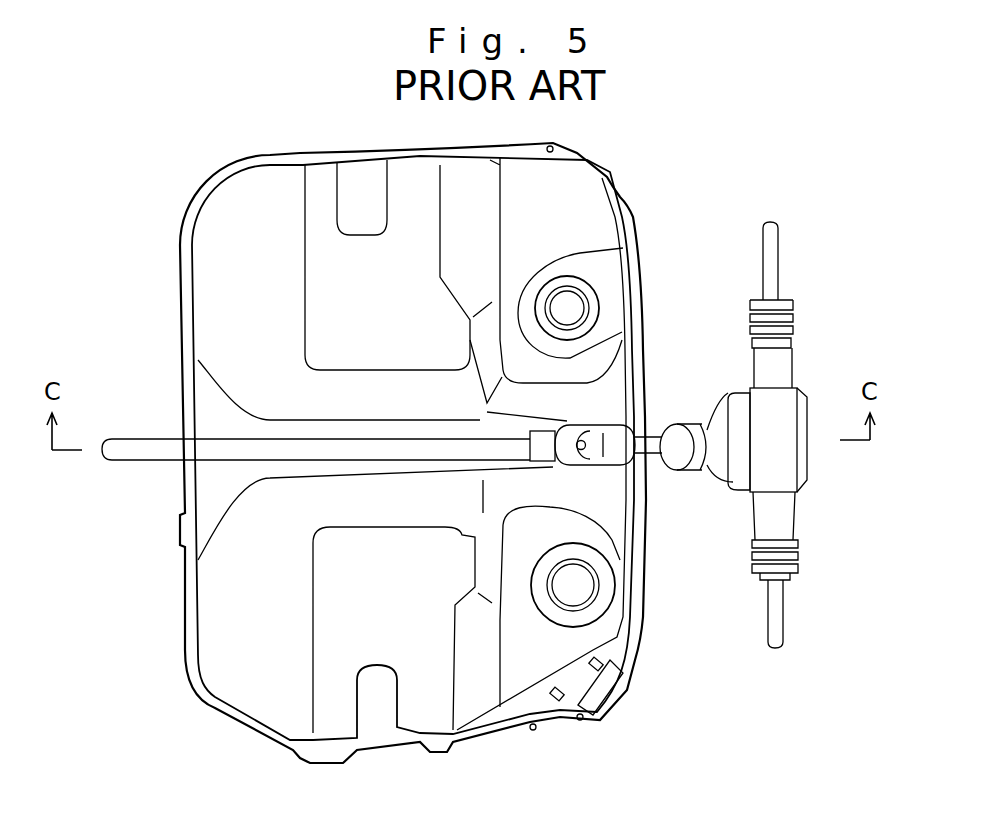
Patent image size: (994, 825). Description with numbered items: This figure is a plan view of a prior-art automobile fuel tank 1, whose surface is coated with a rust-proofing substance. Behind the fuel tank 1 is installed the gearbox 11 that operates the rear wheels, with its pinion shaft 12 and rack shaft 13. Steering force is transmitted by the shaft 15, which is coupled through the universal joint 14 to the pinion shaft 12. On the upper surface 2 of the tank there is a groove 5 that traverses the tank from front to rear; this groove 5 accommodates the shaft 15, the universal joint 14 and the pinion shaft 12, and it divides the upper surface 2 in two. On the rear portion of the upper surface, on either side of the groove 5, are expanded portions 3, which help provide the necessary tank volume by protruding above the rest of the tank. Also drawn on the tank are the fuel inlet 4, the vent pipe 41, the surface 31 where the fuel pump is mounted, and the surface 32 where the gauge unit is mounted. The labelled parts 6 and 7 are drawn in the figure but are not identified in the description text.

The fuel tank 1 is at (184, 722).
The upper surface 2 is at (262, 185).
The expanded portions 3 is at (548, 200).
The fuel pump mounting surface 31 is at (593, 600).
The gauge unit mounting surface 32 is at (587, 313).
The fuel inlet 4 is at (607, 710).
The vent pipe 41 is at (602, 655).
The groove 5 is at (355, 470).
The rod 6 is at (277, 428).
The universal joint 7 is at (598, 466).
The gearbox 11 is at (783, 477).
The pinion shaft 12 is at (660, 450).
The rack shaft 13 is at (775, 283).
The universal joint 14 is at (590, 430).
The shaft 15 is at (155, 462).